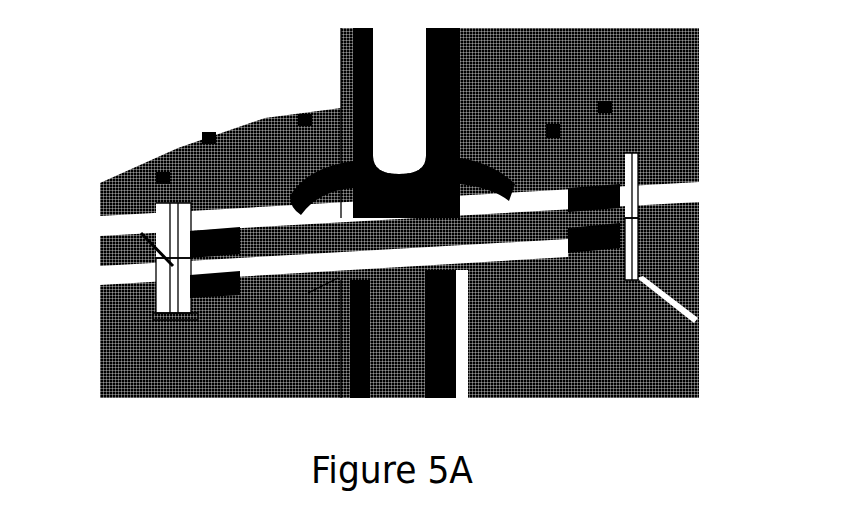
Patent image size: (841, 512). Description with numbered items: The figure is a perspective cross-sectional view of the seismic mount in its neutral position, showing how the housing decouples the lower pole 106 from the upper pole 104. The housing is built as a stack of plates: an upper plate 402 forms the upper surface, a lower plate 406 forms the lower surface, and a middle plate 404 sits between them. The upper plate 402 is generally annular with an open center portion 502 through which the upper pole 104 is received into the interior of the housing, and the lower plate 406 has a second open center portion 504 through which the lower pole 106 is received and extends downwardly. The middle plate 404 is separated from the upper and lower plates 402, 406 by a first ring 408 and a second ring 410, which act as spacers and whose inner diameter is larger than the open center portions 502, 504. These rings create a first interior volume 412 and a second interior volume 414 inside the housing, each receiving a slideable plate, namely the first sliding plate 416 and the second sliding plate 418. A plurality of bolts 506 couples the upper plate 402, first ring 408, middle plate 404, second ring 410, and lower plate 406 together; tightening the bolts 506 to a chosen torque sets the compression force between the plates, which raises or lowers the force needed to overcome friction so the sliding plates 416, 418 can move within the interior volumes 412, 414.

The upper pole 104 is at (455, 46).
The lower pole 106 is at (447, 383).
The upper plate 402 is at (183, 222).
The middle plate 404 is at (182, 258).
The lower plate 406 is at (195, 310).
The first ring 408 is at (633, 185).
The second ring 410 is at (632, 226).
The first interior volume 412 is at (203, 215).
The second interior volume 414 is at (580, 245).
The first sliding plate 416 is at (267, 238).
The second sliding plate 418 is at (477, 250).
The open center portion 502 is at (278, 160).
The second open center portion 504 is at (297, 296).
The bolts 506 is at (548, 118).